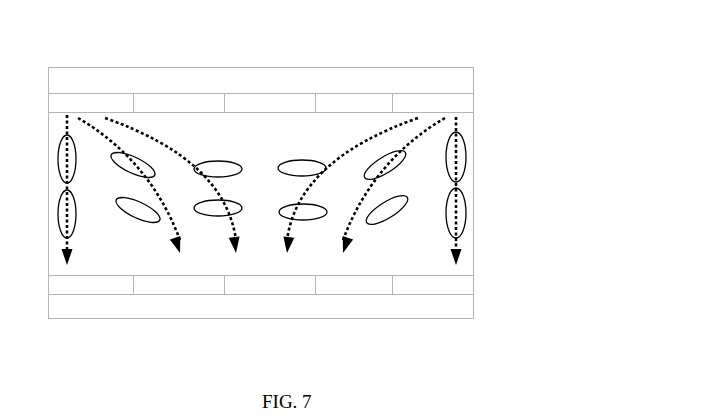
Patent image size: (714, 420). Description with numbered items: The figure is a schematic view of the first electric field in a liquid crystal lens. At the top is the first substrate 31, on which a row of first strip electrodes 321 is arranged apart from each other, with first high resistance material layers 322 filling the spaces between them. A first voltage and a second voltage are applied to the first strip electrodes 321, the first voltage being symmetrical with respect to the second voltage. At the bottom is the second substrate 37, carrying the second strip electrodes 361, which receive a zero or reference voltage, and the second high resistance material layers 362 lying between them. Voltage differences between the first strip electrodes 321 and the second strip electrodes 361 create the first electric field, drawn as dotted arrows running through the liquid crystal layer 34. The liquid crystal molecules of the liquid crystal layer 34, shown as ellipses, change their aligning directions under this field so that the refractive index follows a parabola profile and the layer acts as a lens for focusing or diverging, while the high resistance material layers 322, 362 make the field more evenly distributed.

The first substrate 31 is at (447, 83).
The first strip electrodes 321 is at (292, 102).
The first high resistance material layers 322 is at (355, 103).
The liquid crystal layer 34 is at (463, 132).
The second strip electrodes 361 is at (452, 281).
The second high resistance material layers 362 is at (348, 278).
The second substrate 37 is at (223, 303).